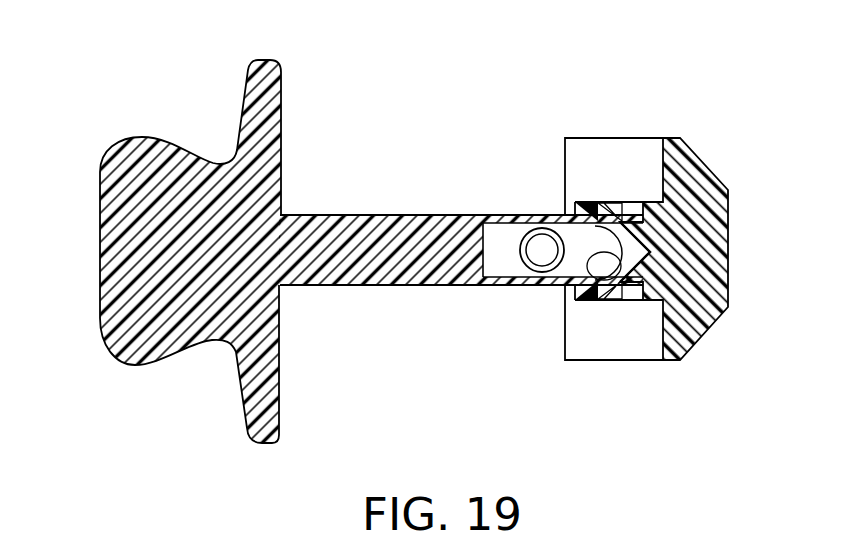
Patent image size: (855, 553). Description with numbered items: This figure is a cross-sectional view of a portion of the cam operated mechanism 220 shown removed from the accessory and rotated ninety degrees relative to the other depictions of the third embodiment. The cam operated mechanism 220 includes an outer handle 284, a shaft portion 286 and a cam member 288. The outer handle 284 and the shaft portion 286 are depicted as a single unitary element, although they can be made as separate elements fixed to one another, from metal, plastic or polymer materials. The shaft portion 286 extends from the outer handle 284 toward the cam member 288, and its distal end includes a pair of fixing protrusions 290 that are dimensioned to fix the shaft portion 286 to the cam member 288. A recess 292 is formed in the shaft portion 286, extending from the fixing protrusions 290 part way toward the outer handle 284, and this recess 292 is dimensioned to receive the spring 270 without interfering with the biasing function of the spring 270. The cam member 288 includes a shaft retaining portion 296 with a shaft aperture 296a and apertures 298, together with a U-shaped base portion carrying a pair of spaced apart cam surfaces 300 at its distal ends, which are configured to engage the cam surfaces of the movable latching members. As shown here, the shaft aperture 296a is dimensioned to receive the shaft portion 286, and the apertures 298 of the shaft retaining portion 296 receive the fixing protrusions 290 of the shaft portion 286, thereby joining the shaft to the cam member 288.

The cam operated mechanism 220 is at (337, 231).
The outer handle 284 is at (153, 210).
The shaft portion 286 is at (380, 255).
The recess 292 is at (540, 213).
The spring 270 is at (540, 272).
The cam surfaces 300 is at (563, 155).
The apertures 298 is at (617, 202).
The cam member 288 is at (697, 222).
The shaft aperture 296a is at (652, 258).
The shaft retaining portion 296 is at (590, 203).
The fixing protrusions 290 is at (600, 203).